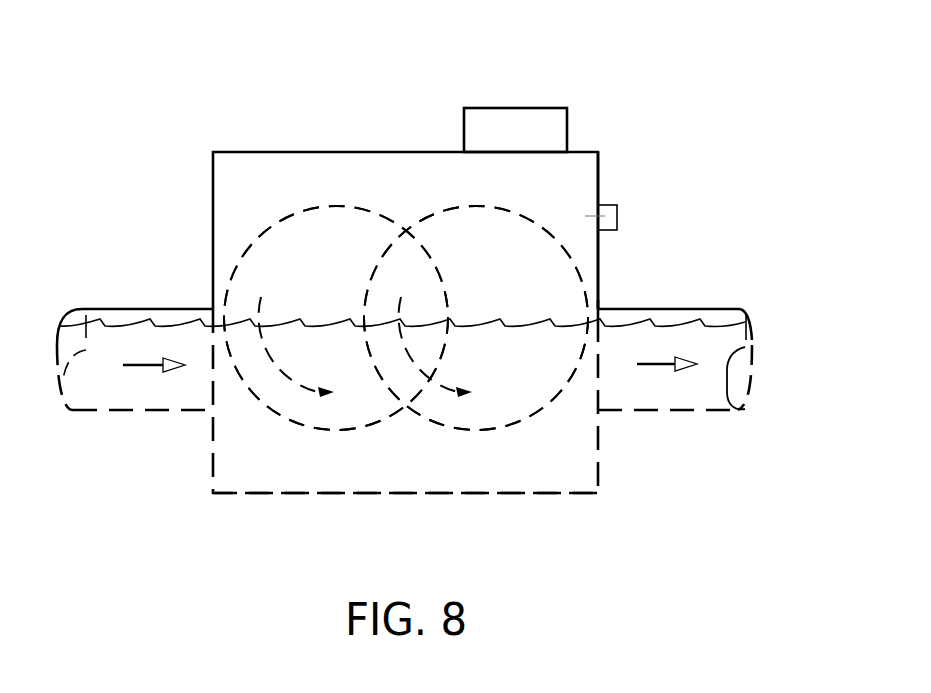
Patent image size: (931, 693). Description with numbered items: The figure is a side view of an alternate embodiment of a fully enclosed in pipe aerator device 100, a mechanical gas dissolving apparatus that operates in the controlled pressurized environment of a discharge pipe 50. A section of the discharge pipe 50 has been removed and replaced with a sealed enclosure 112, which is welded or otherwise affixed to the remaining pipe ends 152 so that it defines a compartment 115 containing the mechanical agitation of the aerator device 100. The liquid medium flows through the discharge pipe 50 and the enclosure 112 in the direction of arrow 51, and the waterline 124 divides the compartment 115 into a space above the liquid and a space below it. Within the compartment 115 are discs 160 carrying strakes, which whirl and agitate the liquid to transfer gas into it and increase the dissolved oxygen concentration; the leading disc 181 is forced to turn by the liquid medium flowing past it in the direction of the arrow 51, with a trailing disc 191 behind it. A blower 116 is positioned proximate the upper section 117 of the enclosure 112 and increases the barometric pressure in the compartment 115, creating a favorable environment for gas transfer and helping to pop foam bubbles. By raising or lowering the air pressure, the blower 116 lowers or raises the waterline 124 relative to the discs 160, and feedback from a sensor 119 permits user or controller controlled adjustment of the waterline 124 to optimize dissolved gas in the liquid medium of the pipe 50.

The in pipe aerator device 100 is at (228, 121).
The compartment 115 is at (249, 194).
The enclosure 112 is at (213, 473).
The blower 116 is at (490, 132).
The upper section of enclosure 117 is at (600, 163).
The sensor 119 is at (617, 205).
The discharge pipe 50 is at (178, 309).
The arrow 51 is at (150, 372).
The waterline 124 is at (700, 322).
The pipe ends 152 is at (600, 308).
The discs 160 is at (308, 208).
The leading disc 181 is at (332, 430).
The second vortex 191 is at (488, 430).